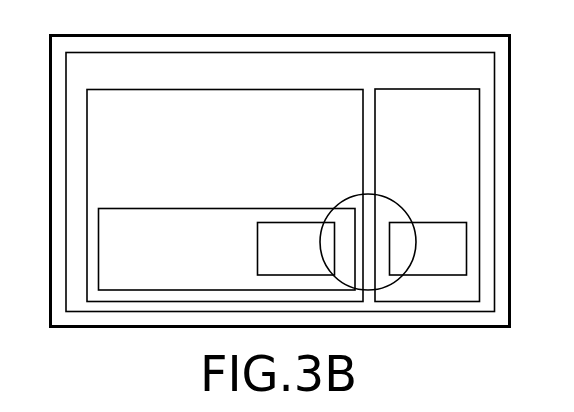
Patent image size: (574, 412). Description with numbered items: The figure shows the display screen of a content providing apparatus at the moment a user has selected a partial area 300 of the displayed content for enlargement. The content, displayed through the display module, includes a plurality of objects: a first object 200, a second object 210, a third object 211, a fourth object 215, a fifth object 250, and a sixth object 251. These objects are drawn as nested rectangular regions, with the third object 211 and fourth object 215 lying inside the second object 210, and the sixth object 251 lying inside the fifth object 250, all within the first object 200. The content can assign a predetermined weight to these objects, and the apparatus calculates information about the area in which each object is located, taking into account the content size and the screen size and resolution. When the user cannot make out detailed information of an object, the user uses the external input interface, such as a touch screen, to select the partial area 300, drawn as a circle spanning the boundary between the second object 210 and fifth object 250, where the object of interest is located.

The first object 200 is at (280, 181).
The second object 210 is at (225, 196).
The fifth object 250 is at (427, 195).
The third object 211 is at (227, 250).
The fourth object 215 is at (296, 249).
The sixth object 251 is at (428, 249).
The partial area 300 is at (386, 198).